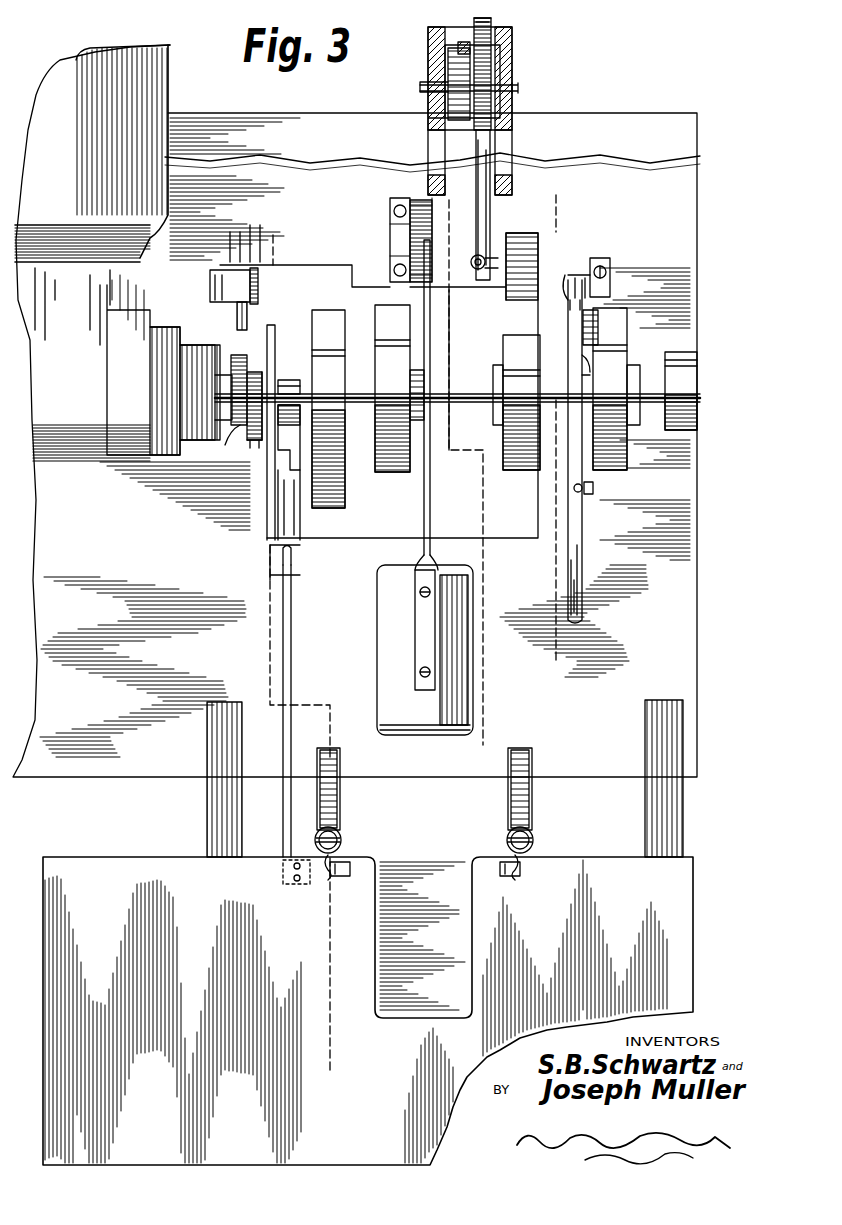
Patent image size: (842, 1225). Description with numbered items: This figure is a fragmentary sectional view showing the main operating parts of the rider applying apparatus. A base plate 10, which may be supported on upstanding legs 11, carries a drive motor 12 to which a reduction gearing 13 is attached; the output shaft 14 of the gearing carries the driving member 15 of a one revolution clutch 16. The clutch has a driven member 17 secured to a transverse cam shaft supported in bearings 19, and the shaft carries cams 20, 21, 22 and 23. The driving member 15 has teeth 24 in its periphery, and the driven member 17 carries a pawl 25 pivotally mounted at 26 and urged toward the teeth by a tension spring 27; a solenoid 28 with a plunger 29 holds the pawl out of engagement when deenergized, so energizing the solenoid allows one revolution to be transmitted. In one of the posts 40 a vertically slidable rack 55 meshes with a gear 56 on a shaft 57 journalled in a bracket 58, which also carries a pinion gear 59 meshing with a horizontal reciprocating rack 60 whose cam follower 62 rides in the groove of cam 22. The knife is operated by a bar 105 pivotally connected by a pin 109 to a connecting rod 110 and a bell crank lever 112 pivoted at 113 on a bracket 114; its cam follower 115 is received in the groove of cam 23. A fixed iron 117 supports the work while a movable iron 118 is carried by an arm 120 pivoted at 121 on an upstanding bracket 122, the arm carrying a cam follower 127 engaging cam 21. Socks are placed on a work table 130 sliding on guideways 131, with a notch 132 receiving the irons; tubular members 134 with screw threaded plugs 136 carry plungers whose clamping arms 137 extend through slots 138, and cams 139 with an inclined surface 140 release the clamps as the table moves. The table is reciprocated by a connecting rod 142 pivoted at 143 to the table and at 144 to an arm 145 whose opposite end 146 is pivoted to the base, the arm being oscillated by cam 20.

The base plate 10 is at (267, 252).
The upstanding legs 11 is at (468, 223).
The drive motor 12 is at (170, 93).
The reduction gearing 13 is at (124, 368).
The output shaft 14 is at (222, 385).
The driving member 15 is at (232, 360).
The one revolution clutch 16 is at (252, 446).
The driven member 17 is at (279, 332).
The bearings 19 is at (667, 365).
The cam 20 is at (345, 315).
The cam 21 is at (405, 312).
The cam 22 is at (522, 470).
The cam 23 is at (627, 460).
The teeth 24 is at (262, 420).
The pawl 25 is at (240, 438).
The pivot 26 is at (265, 390).
The tension spring 27 is at (263, 445).
The solenoid 28 is at (225, 287).
The plunger 29 is at (237, 319).
The posts 40 is at (512, 110).
The vertically slidable rack 55 is at (446, 50).
The gear 56 is at (448, 72).
The shaft 57 is at (505, 88).
The bracket 58 is at (428, 101).
The pinion gear 59 is at (492, 60).
The reciprocating rack 60 is at (492, 28).
The cam follower 62 is at (490, 245).
The bar 105 is at (580, 556).
The pin 109 is at (594, 488).
The connecting rod 110 is at (582, 386).
The bell crank lever 112 is at (575, 275).
The pivot 113 is at (604, 327).
The bracket 114 is at (600, 260).
The cam follower 115 is at (590, 362).
The fixed iron 117 is at (425, 738).
The movable iron 118 is at (378, 648).
The arm 120 is at (424, 495).
The pivot 121 is at (472, 262).
The upstanding bracket 122 is at (390, 218).
The cam follower 127 is at (414, 390).
The work table 130 is at (368, 1011).
The guideways 131 is at (225, 704).
The notch 132 is at (472, 930).
The tubular members 134 is at (332, 829).
The screw threaded plugs 136 is at (340, 836).
The clamping arms 137 is at (340, 878).
The slots 138 is at (326, 875).
The cams 139 is at (338, 756).
The inclined surface 140 is at (318, 768).
The connecting rod 142 is at (292, 622).
The pivot 143 is at (283, 872).
The pivot 144 is at (296, 560).
The arm 145 is at (292, 530).
The pivot end 146 is at (302, 430).